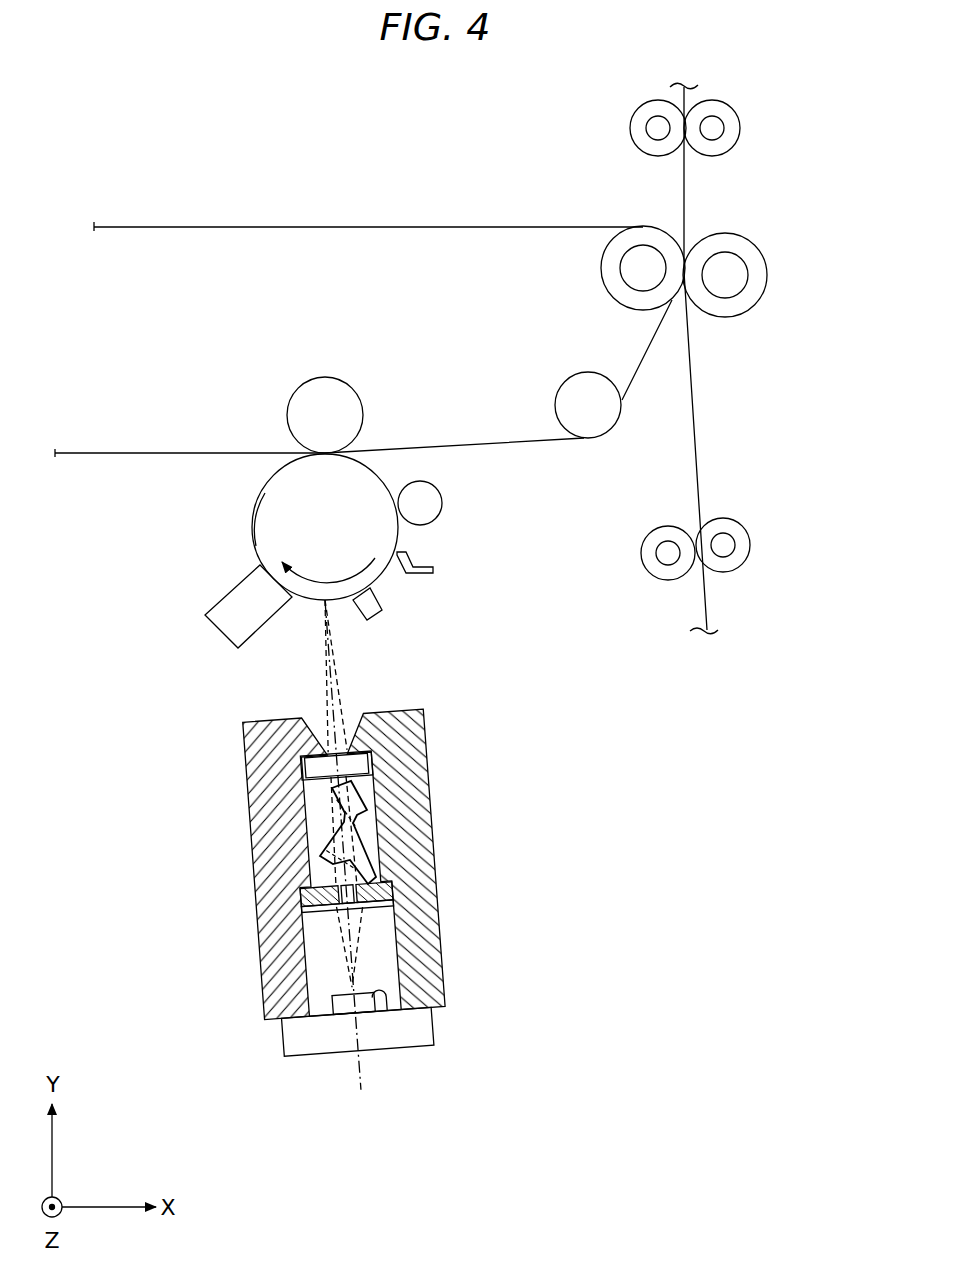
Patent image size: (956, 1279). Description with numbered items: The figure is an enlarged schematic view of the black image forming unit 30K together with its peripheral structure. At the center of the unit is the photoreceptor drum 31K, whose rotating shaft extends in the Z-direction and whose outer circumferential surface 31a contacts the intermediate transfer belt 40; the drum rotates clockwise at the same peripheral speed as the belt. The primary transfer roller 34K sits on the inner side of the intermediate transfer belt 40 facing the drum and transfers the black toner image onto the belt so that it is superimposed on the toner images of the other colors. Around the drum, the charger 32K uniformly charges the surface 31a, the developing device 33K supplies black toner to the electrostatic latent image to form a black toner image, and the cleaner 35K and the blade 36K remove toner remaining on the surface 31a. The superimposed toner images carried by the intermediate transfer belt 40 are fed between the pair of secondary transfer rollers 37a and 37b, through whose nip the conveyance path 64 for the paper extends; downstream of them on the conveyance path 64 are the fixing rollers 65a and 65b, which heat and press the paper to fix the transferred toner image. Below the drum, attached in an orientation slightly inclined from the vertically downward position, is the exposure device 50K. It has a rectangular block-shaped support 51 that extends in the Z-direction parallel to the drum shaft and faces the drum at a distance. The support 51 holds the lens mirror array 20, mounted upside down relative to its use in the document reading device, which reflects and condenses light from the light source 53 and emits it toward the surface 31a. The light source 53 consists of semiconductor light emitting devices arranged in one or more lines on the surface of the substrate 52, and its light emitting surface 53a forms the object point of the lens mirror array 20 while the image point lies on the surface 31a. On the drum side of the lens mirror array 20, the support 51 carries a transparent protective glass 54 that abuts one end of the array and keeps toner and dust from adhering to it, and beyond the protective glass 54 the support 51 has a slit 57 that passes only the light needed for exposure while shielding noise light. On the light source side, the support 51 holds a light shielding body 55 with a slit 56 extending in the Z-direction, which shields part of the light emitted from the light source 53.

The intermediate transfer belt 40 is at (170, 228).
The conveyance path 64 is at (693, 460).
The conveying roller 65a is at (630, 127).
The conveying roller 65b is at (742, 127).
The secondary transfer roller 37a is at (601, 268).
The secondary transfer roller 37b is at (767, 280).
The black image forming unit 30K is at (360, 370).
The primary transfer roller 34K is at (325, 382).
The photoreceptor drum 31K is at (252, 520).
The surface of the photoreceptor drum 31a is at (255, 545).
The cleaner 35K is at (436, 503).
The blade 36K is at (435, 570).
The charger 32K is at (374, 611).
The developing device 33K is at (222, 631).
The exposure device 50K is at (548, 858).
The support 51 is at (430, 937).
The substrate 52 is at (435, 1027).
The light source 53 is at (330, 1000).
The light emitting surface 53a is at (387, 1014).
The protective glass 54 is at (372, 760).
The light shielding body 55 is at (385, 893).
The slit 56 is at (336, 914).
The slit 57 is at (325, 762).
The lens mirror array 20 is at (362, 835).